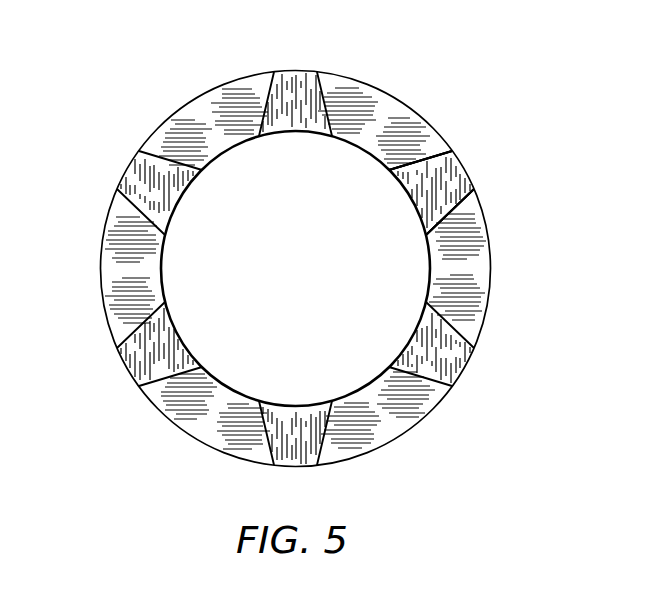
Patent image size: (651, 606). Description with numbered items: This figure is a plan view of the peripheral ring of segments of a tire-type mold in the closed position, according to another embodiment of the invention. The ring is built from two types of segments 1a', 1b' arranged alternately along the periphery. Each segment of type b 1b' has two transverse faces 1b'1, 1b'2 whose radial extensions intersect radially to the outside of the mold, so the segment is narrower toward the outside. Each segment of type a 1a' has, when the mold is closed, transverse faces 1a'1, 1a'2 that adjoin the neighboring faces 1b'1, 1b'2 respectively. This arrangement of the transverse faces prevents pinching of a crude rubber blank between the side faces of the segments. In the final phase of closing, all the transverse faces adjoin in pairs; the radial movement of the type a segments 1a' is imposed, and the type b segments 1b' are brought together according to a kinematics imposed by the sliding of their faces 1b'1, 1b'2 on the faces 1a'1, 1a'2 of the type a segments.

The segment of type a 1a' is at (298, 250).
The segment of type b 1b' is at (291, 251).
The transverse face of segment of type b 1b'1 is at (433, 106).
The transverse face of segment of type a 1a'1 is at (389, 174).
The transverse face of segment of type a 1a'2 is at (415, 213).
The transverse face of segment of type b 1b'2 is at (490, 213).